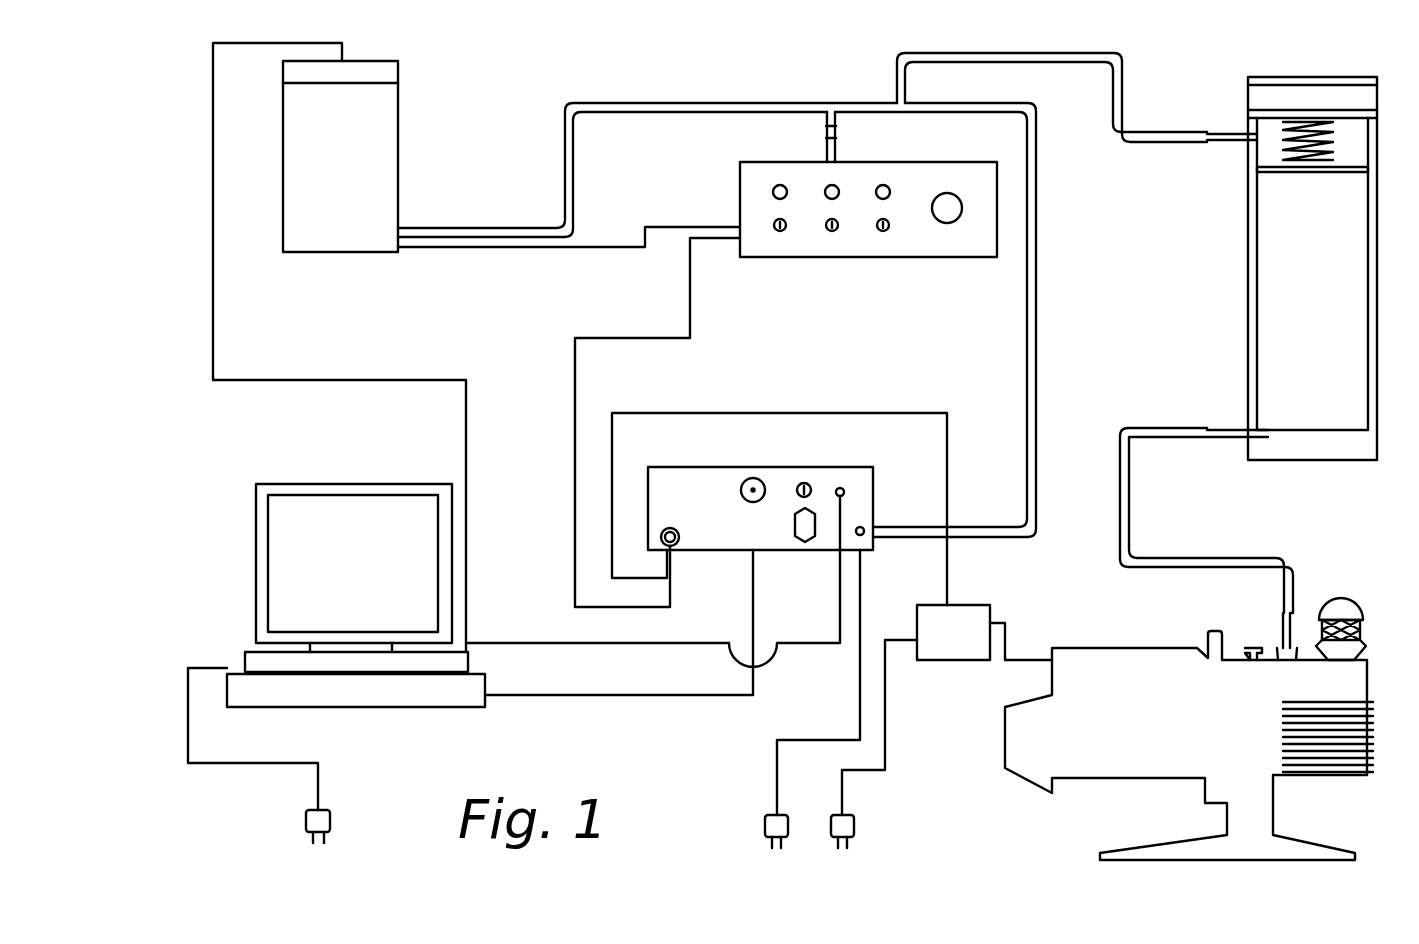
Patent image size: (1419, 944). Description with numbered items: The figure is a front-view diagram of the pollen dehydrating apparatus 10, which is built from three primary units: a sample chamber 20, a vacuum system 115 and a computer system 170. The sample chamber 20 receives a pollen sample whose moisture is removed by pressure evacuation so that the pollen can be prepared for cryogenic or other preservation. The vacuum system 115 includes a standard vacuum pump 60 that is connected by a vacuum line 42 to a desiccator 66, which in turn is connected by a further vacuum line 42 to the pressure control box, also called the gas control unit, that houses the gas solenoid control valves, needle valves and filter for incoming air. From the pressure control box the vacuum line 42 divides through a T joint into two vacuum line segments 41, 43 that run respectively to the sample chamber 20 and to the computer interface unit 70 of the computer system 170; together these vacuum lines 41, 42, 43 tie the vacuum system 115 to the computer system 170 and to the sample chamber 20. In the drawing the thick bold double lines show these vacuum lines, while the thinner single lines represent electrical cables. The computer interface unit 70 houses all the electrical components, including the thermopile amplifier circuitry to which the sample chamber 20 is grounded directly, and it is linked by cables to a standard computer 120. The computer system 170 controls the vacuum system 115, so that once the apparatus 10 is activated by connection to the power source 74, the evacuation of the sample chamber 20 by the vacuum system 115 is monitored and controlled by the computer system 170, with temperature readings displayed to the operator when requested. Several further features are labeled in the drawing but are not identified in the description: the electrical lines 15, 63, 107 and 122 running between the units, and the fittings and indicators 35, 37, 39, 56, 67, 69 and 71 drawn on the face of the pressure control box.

The apparatus 10 is at (527, 70).
The communication line 15 is at (333, 378).
The sample chamber 20 is at (348, 175).
The vacuum line segment 41 is at (565, 150).
The vacuum line 42 is at (838, 126).
The vacuum line segment 43 is at (1037, 157).
The inlet port 35 is at (777, 185).
The inlet port 37 is at (829, 185).
The inlet port 39 is at (887, 185).
The indicator 67 is at (778, 232).
The indicator 69 is at (832, 232).
The indicator 71 is at (887, 232).
The pressure gauge 56 is at (945, 224).
The line 107 is at (568, 252).
The control line 63 is at (575, 372).
The vacuum system 115 is at (1010, 218).
The desiccator 66 is at (1318, 278).
The computer interface unit 70 is at (752, 537).
The computer system 170 is at (790, 456).
The computer 120 is at (330, 515).
The cable 122 is at (580, 700).
The power source 74 is at (964, 641).
The vacuum pump 60 is at (1176, 721).